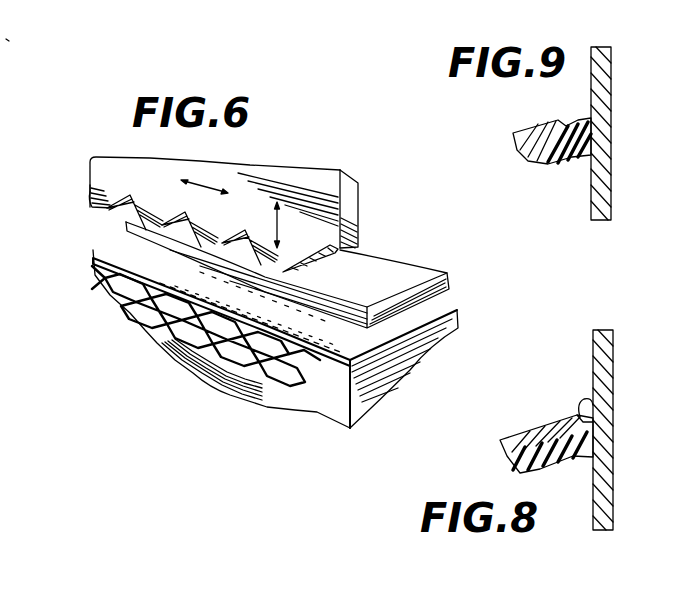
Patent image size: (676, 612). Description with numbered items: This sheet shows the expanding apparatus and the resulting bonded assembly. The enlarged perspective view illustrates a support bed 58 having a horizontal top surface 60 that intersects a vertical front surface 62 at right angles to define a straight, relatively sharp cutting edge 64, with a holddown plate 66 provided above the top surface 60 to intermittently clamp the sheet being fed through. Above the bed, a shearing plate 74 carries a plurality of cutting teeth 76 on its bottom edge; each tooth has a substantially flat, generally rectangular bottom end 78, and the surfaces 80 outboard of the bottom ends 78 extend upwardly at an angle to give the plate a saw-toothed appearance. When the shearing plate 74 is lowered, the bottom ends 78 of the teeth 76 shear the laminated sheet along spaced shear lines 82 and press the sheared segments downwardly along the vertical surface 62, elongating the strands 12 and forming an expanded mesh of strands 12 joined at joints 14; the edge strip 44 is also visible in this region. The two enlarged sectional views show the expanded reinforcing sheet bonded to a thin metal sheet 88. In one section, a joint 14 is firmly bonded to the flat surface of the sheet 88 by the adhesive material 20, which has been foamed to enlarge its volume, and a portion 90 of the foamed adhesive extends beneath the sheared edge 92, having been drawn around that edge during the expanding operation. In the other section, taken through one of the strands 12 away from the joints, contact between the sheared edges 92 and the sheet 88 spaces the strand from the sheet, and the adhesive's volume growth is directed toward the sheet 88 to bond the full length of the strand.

In FIG. 6, the cutting teeth 76 is at (102, 178).
In FIG. 6, the bottom end 78 is at (95, 208).
In FIG. 6, the surfaces 80 is at (124, 208).
In FIG. 6, the shearing plate 74 is at (313, 184).
In FIG. 6, the holddown plate 66 is at (393, 267).
In FIG. 6, the edge strip 44 is at (360, 335).
In FIG. 6, the cutting edge 64 is at (352, 397).
In FIG. 6, the horizontal top surface 60 is at (459, 316).
In FIG. 6, the support bed 58 is at (413, 348).
In FIG. 6, the vertical front surface 62 is at (317, 412).
In FIG. 6, the shear lines 82 is at (168, 282).
In FIG. 9, the sheet 88 is at (597, 188).
In FIG. 8, the sheet 88 is at (603, 468).
In FIG. 9, the strands 12 is at (515, 130).
In FIG. 8, the joint 14 is at (517, 432).
In FIG. 8, the adhesive material 20 is at (540, 470).
In FIG. 8, the portion of foamed adhesive material 90 is at (585, 398).
In FIG. 8, the sheared edge 92 is at (585, 422).